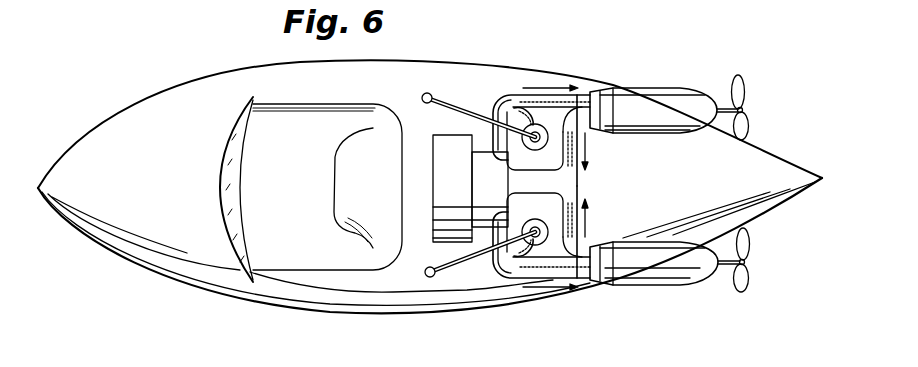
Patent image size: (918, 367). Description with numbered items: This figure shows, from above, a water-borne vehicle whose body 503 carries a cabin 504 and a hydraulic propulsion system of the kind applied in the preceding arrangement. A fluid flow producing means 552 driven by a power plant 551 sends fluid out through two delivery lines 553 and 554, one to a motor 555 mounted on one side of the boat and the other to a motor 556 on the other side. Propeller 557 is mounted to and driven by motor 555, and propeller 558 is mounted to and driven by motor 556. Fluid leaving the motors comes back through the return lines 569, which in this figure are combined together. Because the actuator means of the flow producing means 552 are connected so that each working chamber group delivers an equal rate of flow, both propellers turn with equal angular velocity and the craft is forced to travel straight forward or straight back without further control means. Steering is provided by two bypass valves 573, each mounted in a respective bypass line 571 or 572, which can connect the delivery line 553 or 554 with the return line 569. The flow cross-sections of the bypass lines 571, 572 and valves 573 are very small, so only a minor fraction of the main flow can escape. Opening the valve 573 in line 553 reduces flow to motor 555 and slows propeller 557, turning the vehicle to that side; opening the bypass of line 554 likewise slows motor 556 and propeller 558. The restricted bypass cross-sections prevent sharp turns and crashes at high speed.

The body 503 is at (115, 122).
The cabin 504 is at (295, 118).
The engine 551 is at (443, 155).
The transmission 552 is at (480, 194).
The delivery line 553 is at (543, 110).
The delivery line 554 is at (537, 270).
The motor 555 is at (652, 105).
The motor 556 is at (645, 272).
The propeller 557 is at (747, 90).
The propeller 558 is at (750, 241).
The return line 569 is at (587, 147).
The bypass line 571 is at (516, 103).
The bypass line 572 is at (503, 266).
The bypass valve 573 is at (446, 108).